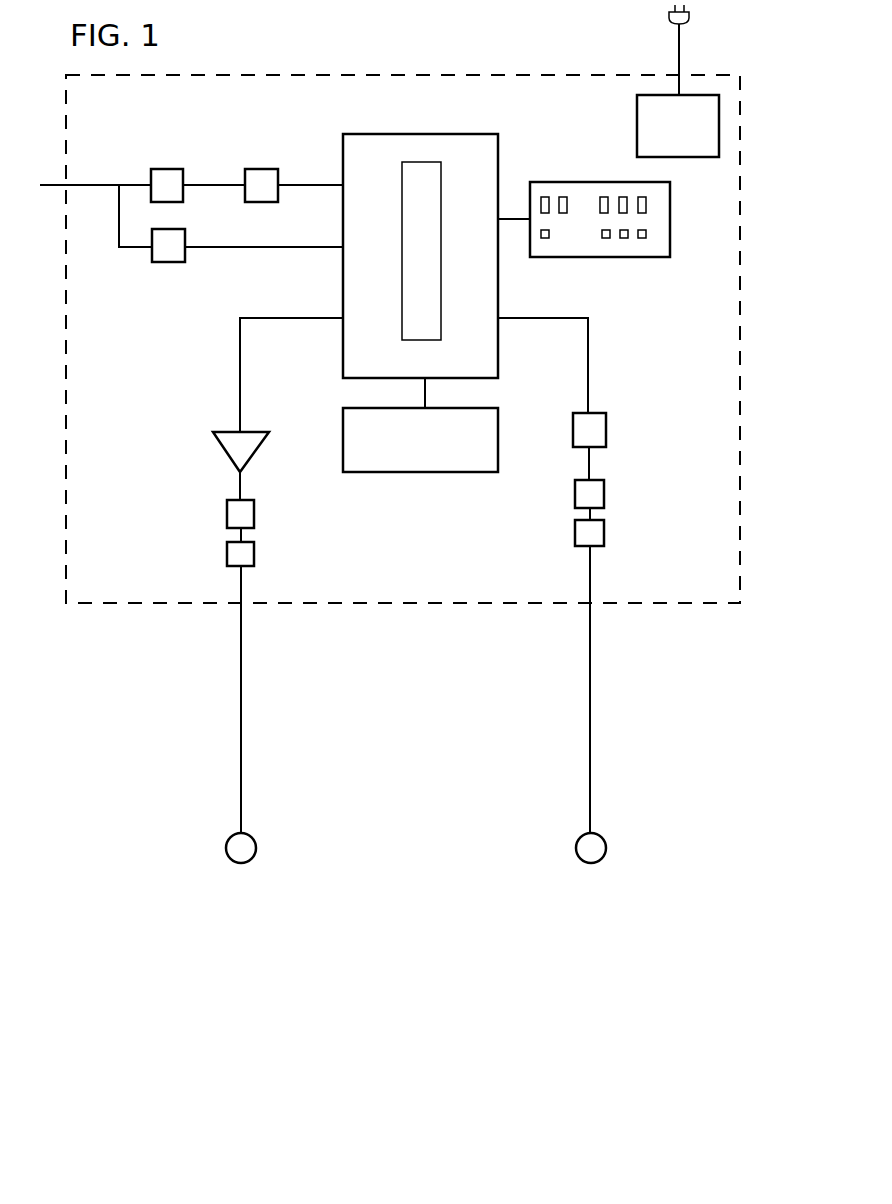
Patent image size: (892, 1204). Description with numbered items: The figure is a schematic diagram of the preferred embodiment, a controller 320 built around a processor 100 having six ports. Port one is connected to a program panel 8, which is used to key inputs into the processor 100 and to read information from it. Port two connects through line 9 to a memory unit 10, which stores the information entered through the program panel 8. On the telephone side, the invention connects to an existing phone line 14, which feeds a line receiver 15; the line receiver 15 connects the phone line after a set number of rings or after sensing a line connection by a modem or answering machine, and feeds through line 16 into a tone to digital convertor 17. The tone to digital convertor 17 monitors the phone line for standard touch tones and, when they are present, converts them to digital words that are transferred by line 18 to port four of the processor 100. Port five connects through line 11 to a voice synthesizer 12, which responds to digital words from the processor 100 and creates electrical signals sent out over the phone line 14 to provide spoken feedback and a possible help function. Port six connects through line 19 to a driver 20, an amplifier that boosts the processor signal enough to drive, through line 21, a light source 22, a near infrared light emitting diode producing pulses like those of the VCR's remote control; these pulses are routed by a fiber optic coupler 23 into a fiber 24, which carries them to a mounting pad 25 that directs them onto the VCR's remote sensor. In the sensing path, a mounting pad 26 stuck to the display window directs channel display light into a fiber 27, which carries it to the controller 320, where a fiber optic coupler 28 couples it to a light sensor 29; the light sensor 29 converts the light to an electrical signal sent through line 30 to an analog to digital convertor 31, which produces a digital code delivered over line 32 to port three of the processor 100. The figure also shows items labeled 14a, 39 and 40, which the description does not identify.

The program panel 8 is at (577, 182).
The line 9 is at (427, 395).
The memory unit 10 is at (428, 473).
The line 11 is at (290, 247).
The voice synthesizer 12 is at (176, 262).
The phone line 14 is at (131, 185).
The branch line 14a is at (118, 225).
The line receiver 15 is at (165, 169).
The line 16 is at (235, 185).
The tone to digital convertor 17 is at (260, 169).
The line 18 is at (336, 185).
The line 19 is at (240, 373).
The driver 20 is at (258, 446).
The line 21 is at (240, 488).
The light source 22 is at (254, 512).
The fiber optic coupler 23 is at (254, 552).
The fiber 24 is at (242, 658).
The mounting pad 25 is at (253, 840).
The mounting pad 26 is at (603, 840).
The fiber 27 is at (592, 643).
The fiber optic coupler 28 is at (605, 531).
The light sensor 29 is at (605, 496).
The line 30 is at (590, 470).
The analog to digital convertor 31 is at (607, 430).
The line 32 is at (590, 370).
The power supply 39 is at (637, 117).
The power plug 40 is at (680, 55).
The processor 100 is at (448, 133).
The controller 320 is at (742, 182).